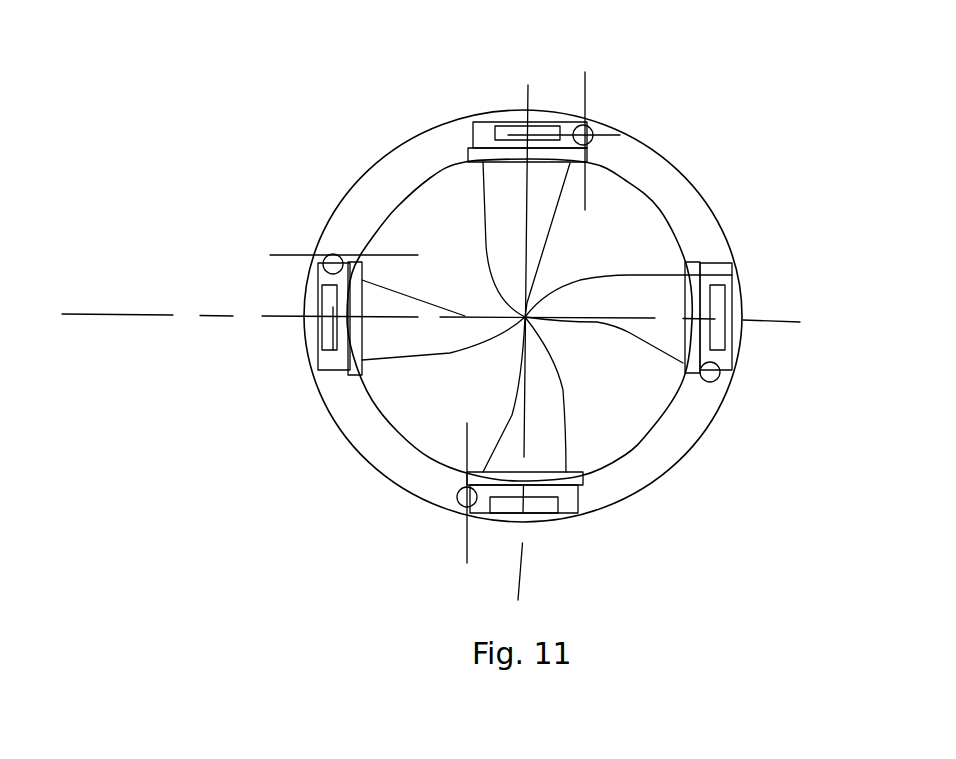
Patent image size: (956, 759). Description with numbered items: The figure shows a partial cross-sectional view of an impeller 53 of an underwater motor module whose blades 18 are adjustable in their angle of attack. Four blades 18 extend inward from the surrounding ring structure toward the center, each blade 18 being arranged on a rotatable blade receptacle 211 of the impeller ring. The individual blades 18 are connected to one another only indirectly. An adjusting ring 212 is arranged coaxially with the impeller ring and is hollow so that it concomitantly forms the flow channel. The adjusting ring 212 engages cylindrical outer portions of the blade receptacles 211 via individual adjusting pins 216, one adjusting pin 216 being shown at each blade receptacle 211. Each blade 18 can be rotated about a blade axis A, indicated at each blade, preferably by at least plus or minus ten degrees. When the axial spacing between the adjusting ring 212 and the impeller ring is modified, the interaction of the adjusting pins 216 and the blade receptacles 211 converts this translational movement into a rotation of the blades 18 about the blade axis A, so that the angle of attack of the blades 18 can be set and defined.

The impeller 53 is at (727, 110).
The adjusting ring 212 is at (360, 214).
The blade 18 is at (503, 209).
The blade receptacle 211 is at (483, 130).
The adjusting pin 216 is at (587, 125).
The blade axis A is at (530, 93).